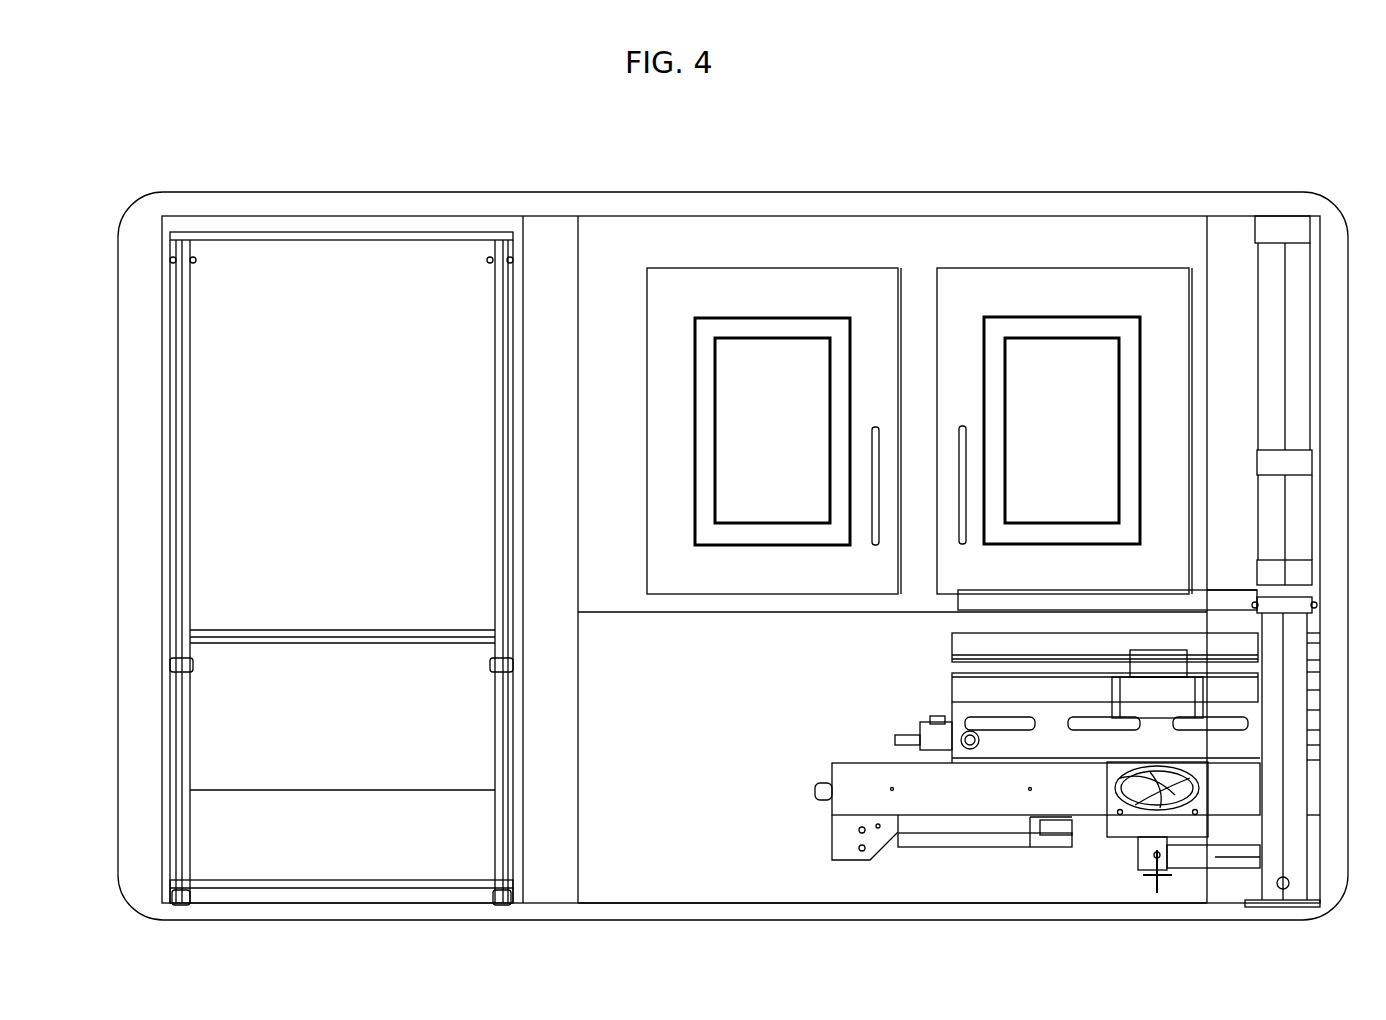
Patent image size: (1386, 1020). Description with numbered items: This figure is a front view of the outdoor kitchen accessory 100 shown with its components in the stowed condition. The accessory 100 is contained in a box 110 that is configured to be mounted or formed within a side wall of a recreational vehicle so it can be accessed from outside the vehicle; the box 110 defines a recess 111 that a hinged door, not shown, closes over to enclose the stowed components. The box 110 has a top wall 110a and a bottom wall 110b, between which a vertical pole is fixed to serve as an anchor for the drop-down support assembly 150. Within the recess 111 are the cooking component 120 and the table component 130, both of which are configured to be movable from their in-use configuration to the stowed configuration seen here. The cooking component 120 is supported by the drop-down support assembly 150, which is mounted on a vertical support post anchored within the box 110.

The outdoor kitchen accessory 100 is at (771, 168).
The box 110 is at (1053, 198).
The top wall 110a is at (637, 222).
The bottom wall 110b is at (638, 897).
The recess 111 is at (597, 213).
The cooking component 120 is at (941, 835).
The table component 130 is at (254, 202).
The drop-down support assembly 150 is at (1250, 419).